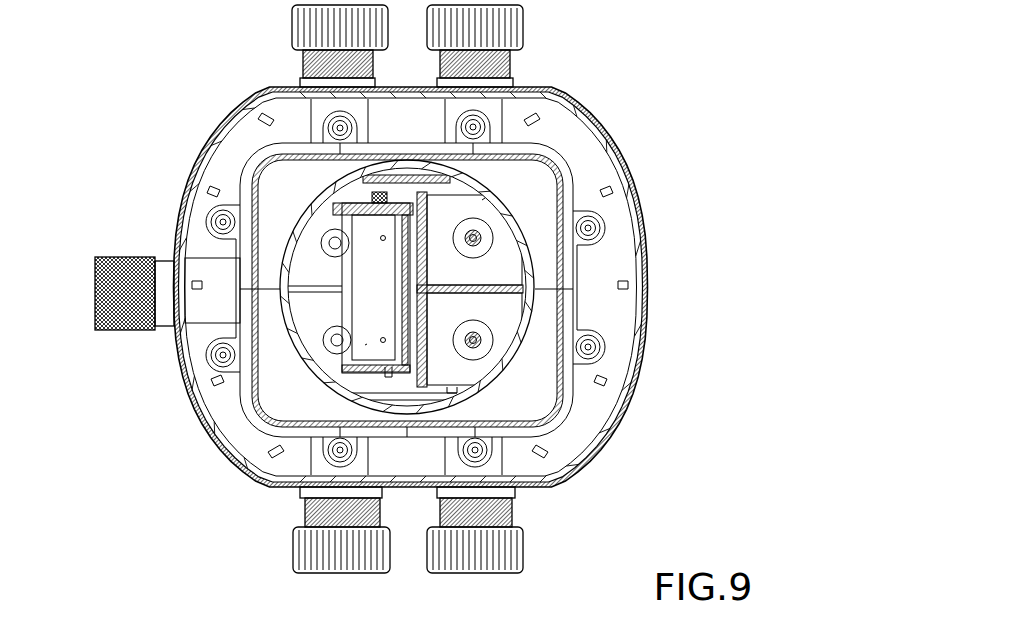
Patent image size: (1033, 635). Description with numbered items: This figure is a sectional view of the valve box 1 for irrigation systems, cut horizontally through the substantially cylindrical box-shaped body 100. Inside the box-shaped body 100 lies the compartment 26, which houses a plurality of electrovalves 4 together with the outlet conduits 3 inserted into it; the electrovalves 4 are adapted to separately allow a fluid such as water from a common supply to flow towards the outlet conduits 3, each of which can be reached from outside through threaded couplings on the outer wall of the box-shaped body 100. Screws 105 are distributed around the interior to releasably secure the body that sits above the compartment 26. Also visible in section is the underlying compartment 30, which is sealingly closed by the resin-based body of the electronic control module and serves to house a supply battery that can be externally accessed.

The valve box 1 is at (407, 289).
The box-shaped body 100 is at (635, 394).
The compartment 30 is at (358, 362).
The outlet conduits 3 is at (448, 457).
The screws 105 is at (292, 478).
The compartment 26 is at (545, 397).
The electrovalves 4 is at (401, 287).